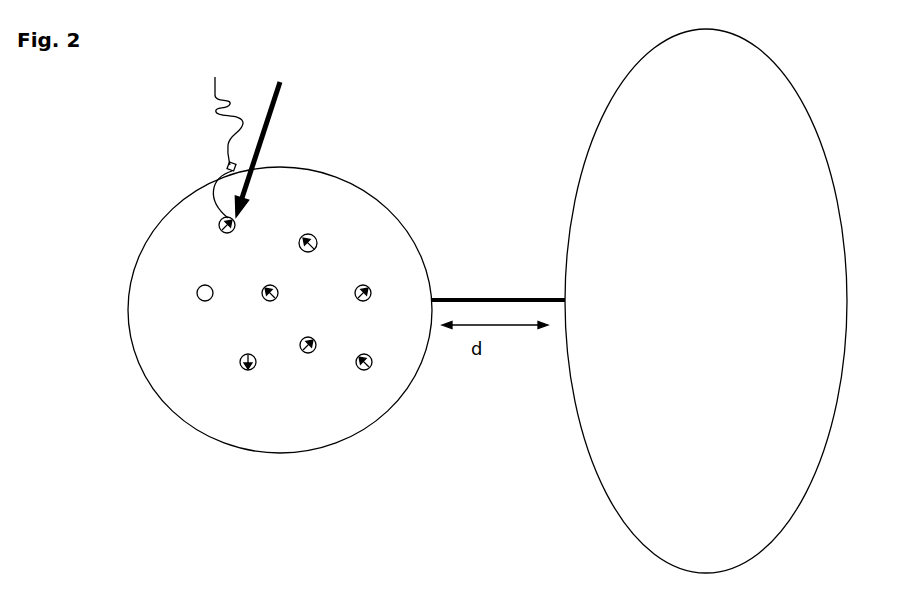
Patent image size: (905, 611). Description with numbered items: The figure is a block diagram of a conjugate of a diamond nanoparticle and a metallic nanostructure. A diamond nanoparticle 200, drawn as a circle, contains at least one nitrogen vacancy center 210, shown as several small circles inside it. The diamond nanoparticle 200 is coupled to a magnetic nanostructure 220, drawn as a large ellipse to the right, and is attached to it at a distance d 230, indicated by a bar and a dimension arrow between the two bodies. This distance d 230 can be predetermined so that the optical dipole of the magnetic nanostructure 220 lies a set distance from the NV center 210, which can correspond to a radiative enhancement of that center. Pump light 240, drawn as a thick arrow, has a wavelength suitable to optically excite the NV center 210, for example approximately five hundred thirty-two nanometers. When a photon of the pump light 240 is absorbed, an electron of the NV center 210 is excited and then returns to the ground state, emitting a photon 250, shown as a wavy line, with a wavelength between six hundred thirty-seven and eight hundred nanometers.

The diamond nanoparticle 200 is at (358, 185).
The nitrogen vacancy center 210 is at (208, 287).
The magnetic nanostructure 220 is at (713, 80).
The distance d 230 is at (474, 298).
The pump light 240 is at (263, 150).
The emitted photon 250 is at (215, 115).